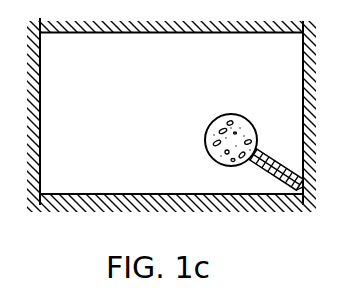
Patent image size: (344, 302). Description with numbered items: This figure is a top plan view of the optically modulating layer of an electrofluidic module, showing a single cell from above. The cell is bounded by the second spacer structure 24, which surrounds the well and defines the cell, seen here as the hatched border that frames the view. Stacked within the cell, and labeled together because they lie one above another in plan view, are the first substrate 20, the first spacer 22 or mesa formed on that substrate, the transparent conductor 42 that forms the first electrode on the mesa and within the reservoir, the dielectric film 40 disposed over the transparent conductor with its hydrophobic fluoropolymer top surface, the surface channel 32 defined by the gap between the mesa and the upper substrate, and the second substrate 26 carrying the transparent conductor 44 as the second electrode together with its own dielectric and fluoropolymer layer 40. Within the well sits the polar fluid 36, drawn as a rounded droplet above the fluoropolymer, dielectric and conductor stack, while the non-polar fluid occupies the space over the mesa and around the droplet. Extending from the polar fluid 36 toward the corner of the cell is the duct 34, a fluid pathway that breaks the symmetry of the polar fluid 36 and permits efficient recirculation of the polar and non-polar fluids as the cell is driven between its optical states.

The first substrate 20 is at (140, 146).
The first spacer 22 is at (140, 135).
The second spacer structure 24 is at (34, 125).
The second substrate 26 is at (140, 71).
The surface channel 32 is at (140, 103).
The duct 34 is at (291, 172).
The polar fluid 36 is at (218, 156).
The dielectric film 40 is at (140, 104).
The transparent conductor 42 is at (140, 125).
The transparent conductor 44 is at (140, 82).